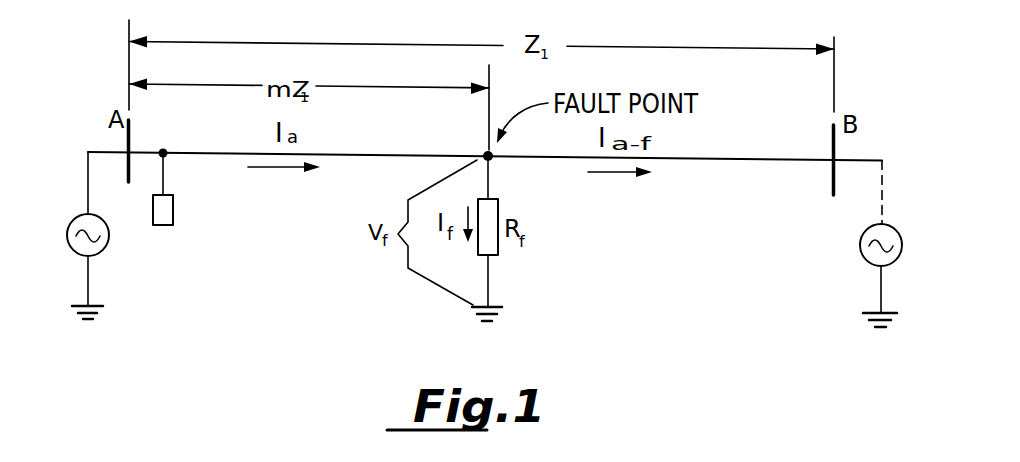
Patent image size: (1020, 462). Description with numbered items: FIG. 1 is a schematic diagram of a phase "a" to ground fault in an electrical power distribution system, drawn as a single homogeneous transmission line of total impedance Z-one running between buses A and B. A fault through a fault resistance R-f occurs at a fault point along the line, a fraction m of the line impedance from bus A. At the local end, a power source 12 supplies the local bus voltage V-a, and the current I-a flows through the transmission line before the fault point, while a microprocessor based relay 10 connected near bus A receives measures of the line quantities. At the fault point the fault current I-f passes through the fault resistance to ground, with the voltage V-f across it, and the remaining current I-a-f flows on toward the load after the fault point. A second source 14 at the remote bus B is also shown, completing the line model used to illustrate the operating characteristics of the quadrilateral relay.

The microprocessor based relay 10 is at (180, 226).
The power source 12 is at (102, 247).
The remote source 14 is at (865, 255).